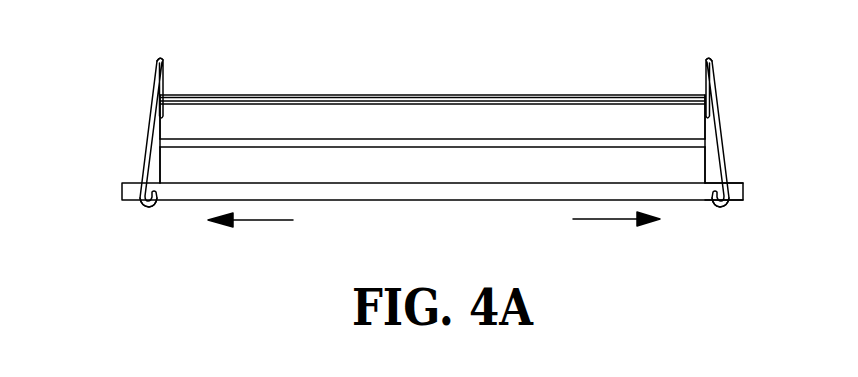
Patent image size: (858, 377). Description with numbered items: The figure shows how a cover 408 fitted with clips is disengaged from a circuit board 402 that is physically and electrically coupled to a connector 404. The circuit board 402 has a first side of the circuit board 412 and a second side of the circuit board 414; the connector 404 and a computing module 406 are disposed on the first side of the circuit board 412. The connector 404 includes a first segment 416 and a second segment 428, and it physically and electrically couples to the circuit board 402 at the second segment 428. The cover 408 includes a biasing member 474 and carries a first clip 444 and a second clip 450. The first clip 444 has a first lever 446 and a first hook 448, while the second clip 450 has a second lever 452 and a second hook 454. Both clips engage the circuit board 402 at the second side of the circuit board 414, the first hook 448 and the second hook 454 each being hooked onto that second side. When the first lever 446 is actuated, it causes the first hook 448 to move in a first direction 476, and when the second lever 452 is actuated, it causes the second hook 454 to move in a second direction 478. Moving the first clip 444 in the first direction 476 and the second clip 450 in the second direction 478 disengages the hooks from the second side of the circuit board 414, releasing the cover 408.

The circuit board 402 is at (745, 190).
The connector 404 is at (432, 108).
The computing module 406 is at (265, 145).
The cover 408 is at (548, 92).
The first side of the circuit board 412 is at (742, 176).
The second side of the circuit board 414 is at (743, 205).
The first segment 416 is at (203, 117).
The second segment 428 is at (313, 163).
The first clip 444 is at (130, 148).
The first lever 446 is at (156, 61).
The first hook 448 is at (151, 208).
The second clip 450 is at (734, 147).
The second lever 452 is at (713, 61).
The second hook 454 is at (716, 208).
The biasing member 474 is at (434, 95).
The first direction 476 is at (266, 221).
The second direction 478 is at (611, 220).